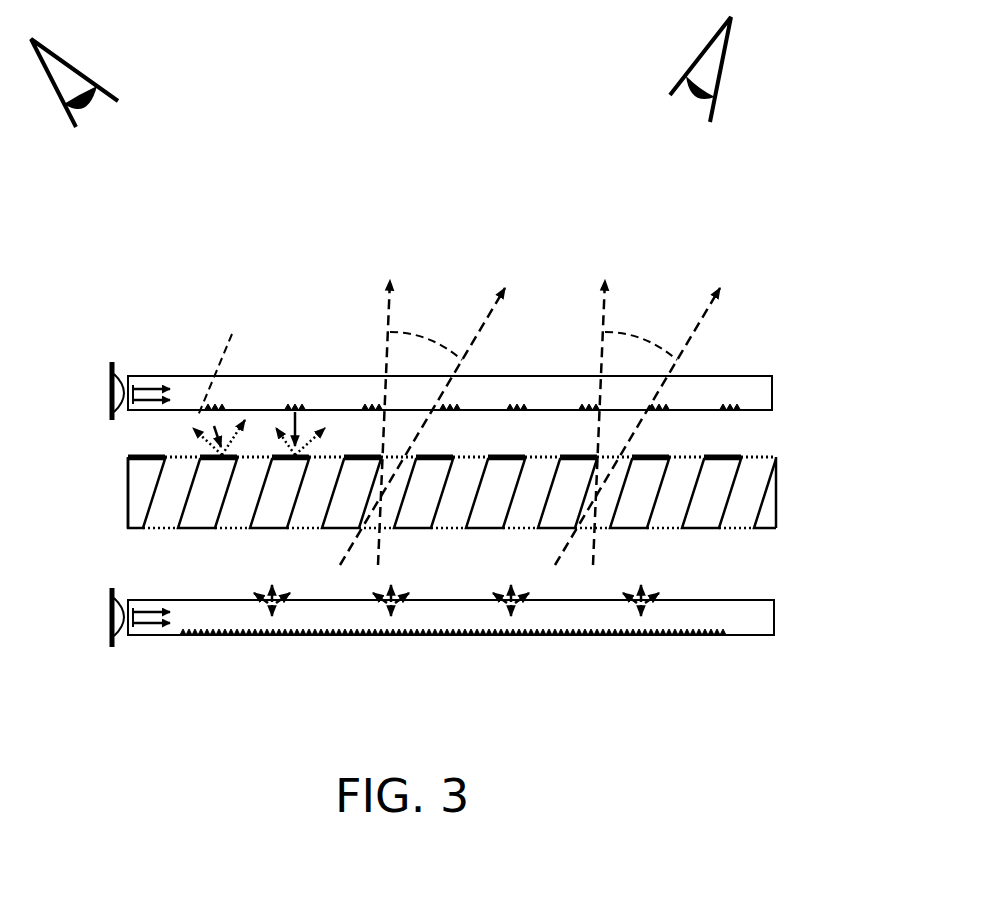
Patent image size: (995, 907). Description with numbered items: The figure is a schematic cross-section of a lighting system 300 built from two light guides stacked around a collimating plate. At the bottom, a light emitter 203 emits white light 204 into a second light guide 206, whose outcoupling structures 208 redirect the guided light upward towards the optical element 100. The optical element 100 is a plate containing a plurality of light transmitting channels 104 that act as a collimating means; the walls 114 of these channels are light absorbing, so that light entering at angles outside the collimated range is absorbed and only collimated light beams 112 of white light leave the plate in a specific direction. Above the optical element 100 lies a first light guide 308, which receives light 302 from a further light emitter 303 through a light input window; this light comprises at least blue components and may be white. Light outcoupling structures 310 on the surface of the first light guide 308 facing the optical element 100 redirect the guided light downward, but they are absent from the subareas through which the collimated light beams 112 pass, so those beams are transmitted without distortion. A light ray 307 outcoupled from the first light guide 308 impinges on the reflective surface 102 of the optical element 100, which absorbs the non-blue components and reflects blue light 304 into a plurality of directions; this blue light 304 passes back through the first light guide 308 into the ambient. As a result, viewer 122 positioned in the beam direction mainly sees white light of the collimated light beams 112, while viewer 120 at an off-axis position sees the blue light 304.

The optical element 100 is at (414, 489).
The reflective surface 102 is at (112, 448).
The light transmitting channels 104 is at (235, 510).
The collimated light beams 112 is at (427, 337).
The walls 114 is at (660, 520).
The viewer 120 is at (63, 59).
The viewer 122 is at (703, 52).
The light emitter 203 is at (110, 617).
The white light 204 is at (145, 628).
The second light guide 206 is at (548, 618).
The outcoupling structures 208 is at (612, 636).
The lighting system 300 is at (96, 710).
The light 302 is at (147, 388).
The further light emitter 303 is at (110, 387).
The blue light 304 is at (186, 418).
The light ray 307 is at (227, 379).
The first light guide 308 is at (322, 405).
The light outcoupling structures 310 is at (338, 405).